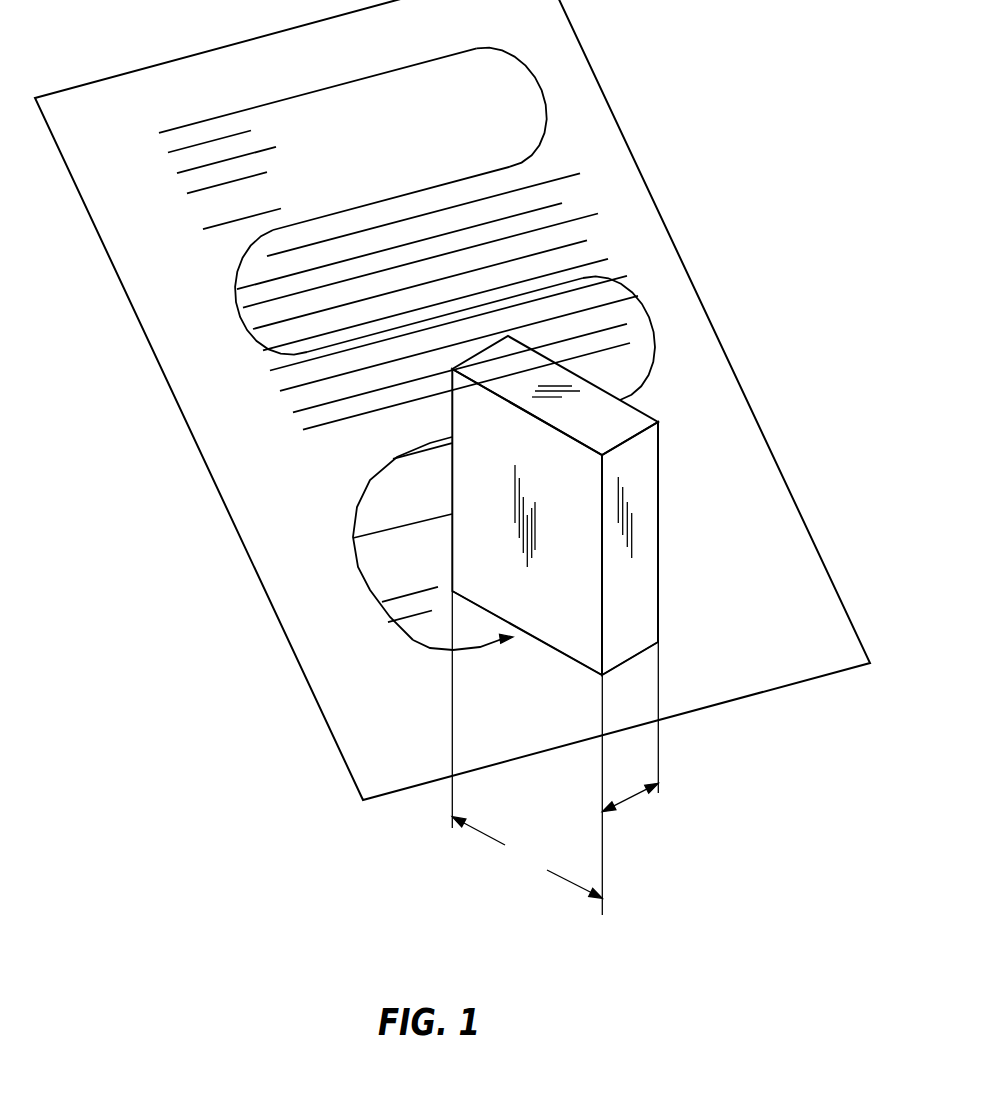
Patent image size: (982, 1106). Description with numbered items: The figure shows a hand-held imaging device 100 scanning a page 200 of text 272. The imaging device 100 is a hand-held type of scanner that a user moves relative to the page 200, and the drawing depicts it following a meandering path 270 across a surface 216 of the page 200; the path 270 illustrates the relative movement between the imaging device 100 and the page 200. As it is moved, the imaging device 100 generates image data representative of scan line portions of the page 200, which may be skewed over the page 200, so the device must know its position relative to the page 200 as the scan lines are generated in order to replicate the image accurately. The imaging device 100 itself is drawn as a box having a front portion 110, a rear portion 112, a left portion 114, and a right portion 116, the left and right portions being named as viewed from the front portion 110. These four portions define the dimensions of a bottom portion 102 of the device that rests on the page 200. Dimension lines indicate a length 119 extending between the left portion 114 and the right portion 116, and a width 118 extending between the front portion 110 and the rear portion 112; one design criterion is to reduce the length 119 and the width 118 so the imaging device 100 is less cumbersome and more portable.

The imaging device 100 is at (680, 496).
The bottom portion 102 is at (627, 660).
The front portion 110 is at (620, 400).
The rear portion 112 is at (553, 633).
The left portion 114 is at (640, 563).
The right portion 116 is at (452, 414).
The width 118 is at (630, 797).
The length 119 is at (527, 858).
The page 200 is at (704, 232).
The surface 216 is at (610, 170).
The meandering path 270 is at (537, 85).
The text 272 is at (303, 432).